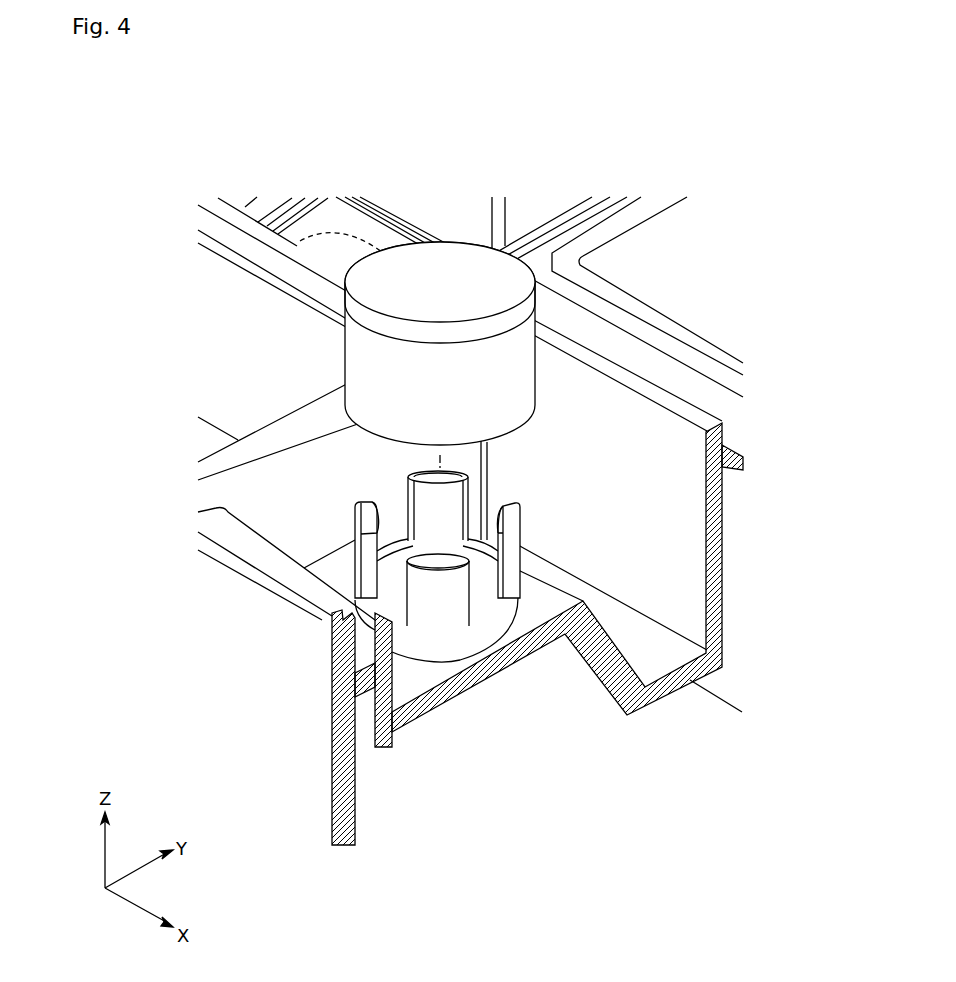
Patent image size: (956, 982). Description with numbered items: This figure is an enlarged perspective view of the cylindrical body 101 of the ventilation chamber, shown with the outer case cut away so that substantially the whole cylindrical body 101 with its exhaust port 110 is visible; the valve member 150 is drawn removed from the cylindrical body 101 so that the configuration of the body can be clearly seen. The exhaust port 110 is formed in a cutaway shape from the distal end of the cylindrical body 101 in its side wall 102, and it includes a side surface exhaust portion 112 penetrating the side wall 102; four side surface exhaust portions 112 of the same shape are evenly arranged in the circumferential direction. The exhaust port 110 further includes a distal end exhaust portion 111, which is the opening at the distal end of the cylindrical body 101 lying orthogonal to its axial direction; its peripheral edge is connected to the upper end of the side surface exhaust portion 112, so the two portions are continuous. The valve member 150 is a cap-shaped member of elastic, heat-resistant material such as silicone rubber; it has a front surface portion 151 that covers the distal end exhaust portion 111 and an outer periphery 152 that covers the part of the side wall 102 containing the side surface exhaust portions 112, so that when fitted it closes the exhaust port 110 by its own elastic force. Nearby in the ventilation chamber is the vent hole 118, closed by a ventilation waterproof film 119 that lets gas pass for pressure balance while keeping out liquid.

The cylindrical body 101 is at (436, 668).
The side wall 102 is at (447, 597).
The exhaust port 110 is at (576, 643).
The distal end exhaust portion 111 is at (475, 506).
The side surface exhaust portion 112 is at (493, 582).
The vent hole 118 is at (338, 232).
The ventilation waterproof film 119 is at (383, 240).
The valve member 150 is at (471, 263).
The front surface portion 151 is at (473, 282).
The outer periphery 152 is at (500, 353).